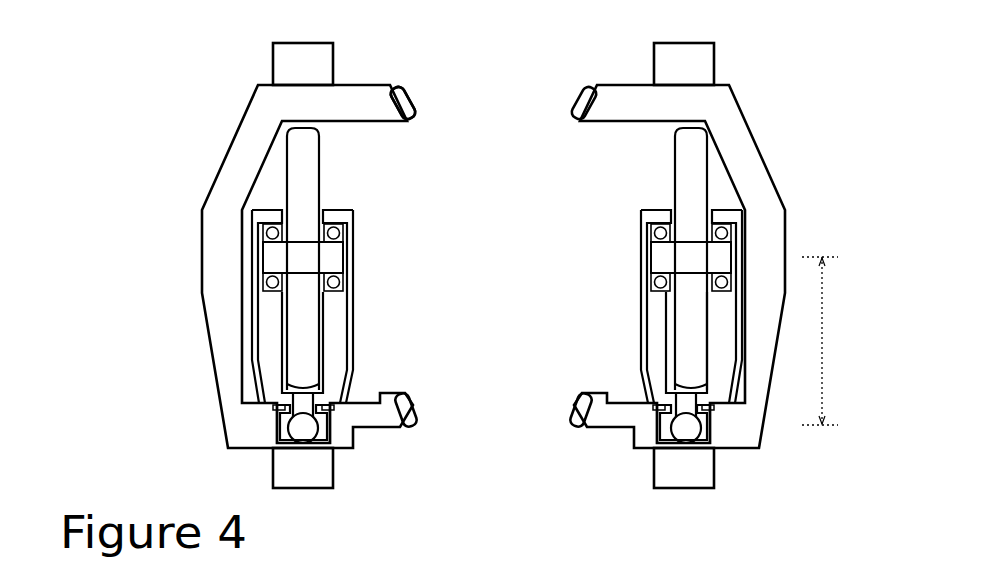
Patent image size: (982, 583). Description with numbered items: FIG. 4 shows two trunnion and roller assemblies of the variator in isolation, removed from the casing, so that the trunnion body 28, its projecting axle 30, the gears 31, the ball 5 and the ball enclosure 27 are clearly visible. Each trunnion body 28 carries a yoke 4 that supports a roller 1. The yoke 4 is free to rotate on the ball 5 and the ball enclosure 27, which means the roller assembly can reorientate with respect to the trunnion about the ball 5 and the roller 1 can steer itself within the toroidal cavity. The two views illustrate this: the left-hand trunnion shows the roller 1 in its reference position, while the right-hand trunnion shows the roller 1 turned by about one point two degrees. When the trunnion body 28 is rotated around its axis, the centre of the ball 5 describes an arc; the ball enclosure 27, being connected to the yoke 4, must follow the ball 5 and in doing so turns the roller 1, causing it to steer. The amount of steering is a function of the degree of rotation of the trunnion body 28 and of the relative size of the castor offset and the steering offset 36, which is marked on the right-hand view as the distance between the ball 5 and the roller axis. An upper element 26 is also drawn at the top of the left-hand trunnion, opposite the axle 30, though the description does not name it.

The roller 1 is at (320, 150).
The yoke 4 is at (353, 273).
The ball 5 is at (303, 425).
The upper post 26 is at (288, 43).
The ball enclosure 27 is at (330, 428).
The trunnion body 28 is at (203, 227).
The axle 30 is at (320, 488).
The gears 31 is at (407, 93).
The steering offset 36 is at (837, 341).